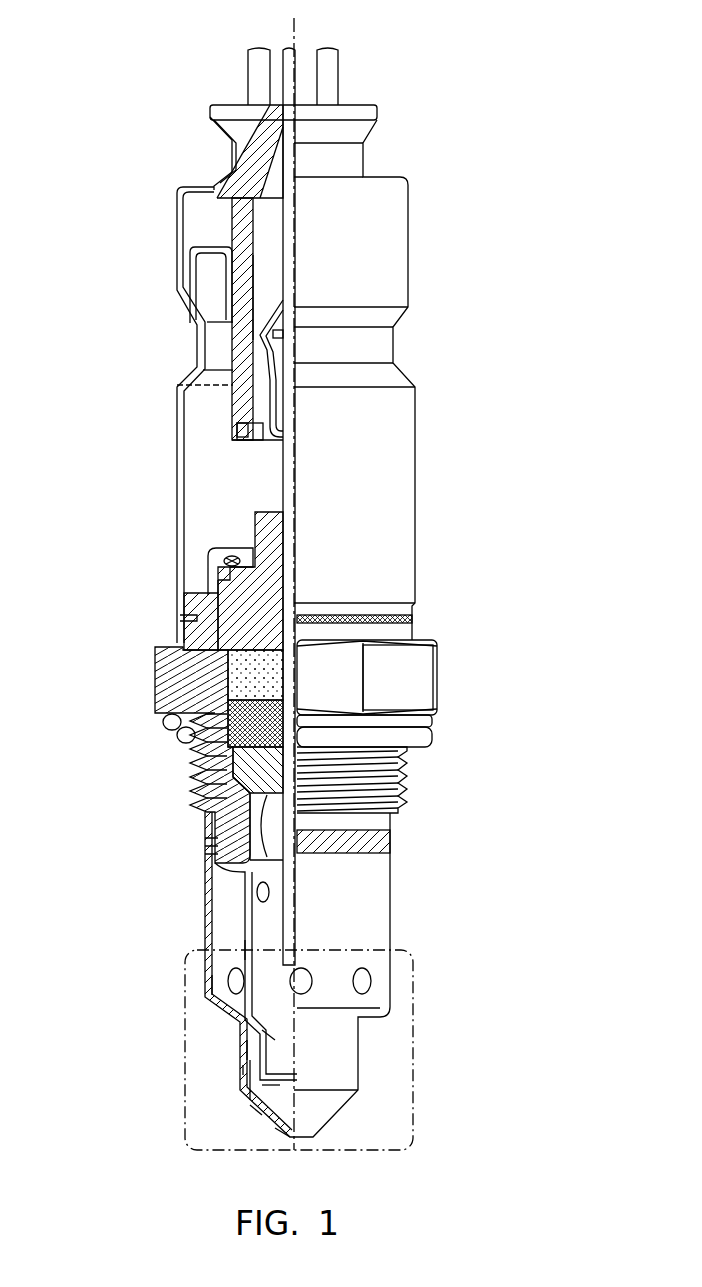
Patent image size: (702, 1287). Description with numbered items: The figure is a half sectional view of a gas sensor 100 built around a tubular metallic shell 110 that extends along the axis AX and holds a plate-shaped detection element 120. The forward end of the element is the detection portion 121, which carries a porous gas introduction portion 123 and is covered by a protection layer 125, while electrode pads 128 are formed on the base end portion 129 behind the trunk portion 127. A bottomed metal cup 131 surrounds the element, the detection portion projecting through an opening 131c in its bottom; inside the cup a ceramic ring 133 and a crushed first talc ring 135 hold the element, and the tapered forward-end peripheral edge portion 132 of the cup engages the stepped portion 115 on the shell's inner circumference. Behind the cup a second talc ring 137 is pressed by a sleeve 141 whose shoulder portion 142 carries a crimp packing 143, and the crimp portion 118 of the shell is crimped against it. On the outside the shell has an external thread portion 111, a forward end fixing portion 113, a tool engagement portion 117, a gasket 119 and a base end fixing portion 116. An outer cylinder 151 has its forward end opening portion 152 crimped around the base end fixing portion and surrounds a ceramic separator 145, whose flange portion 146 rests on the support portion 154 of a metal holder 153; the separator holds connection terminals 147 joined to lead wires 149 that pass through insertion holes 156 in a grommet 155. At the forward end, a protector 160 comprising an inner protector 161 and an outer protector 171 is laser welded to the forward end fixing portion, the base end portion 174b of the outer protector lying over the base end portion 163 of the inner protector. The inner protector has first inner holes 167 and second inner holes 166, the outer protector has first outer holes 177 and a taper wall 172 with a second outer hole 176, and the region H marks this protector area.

The gas sensor 100 is at (496, 148).
The metallic shell 110 is at (435, 660).
The external thread portion 111 is at (400, 795).
The forward end fixing portion 113 is at (250, 880).
The stepped portion 115 is at (205, 795).
The base end fixing portion 116 is at (190, 596).
The tool engagement portion 117 is at (425, 690).
The crimp portion 118 is at (262, 512).
The gasket 119 is at (420, 737).
The detection element 120 is at (240, 928).
The detection portion 121 is at (280, 1020).
The gas introduction portion 123 is at (310, 910).
The protection layer 125 is at (225, 978).
The trunk portion 127 is at (215, 668).
The electrode pads 128 is at (250, 412).
The base end portion 129 is at (270, 352).
The metal cup 131 is at (255, 740).
The opening 131c is at (258, 892).
The forward-end peripheral edge portion 132 is at (215, 815).
The ceramic ring 133 is at (250, 765).
The first talc ring 135 is at (182, 714).
The second talc ring 137 is at (290, 660).
The sleeve 141 is at (250, 508).
The shoulder portion 142 is at (226, 568).
The crimp packing 143 is at (225, 548).
The separator 145 is at (237, 325).
The flange portion 146 is at (217, 240).
The connection terminals 147 is at (265, 385).
The lead wires 149 is at (258, 72).
The outer cylinder 151 is at (415, 445).
The forward end opening portion 152 is at (182, 625).
The metal holder 153 is at (230, 250).
The support portion 154 is at (230, 293).
The grommet 155 is at (228, 118).
The insertion holes 156 is at (233, 157).
The protector 160 is at (86, 1070).
The inner protector 161 is at (245, 1070).
The base end portion 163 is at (245, 830).
The second inner holes 166 is at (270, 1050).
The first inner holes 167 is at (240, 950).
The outer protector 171 is at (290, 1085).
The taper wall 172 is at (255, 1120).
The base end portion 174b is at (210, 850).
The second outer hole 176 is at (288, 1135).
The first outer holes 177 is at (232, 984).
The axis AX is at (296, 38).
The heater region H is at (415, 1056).